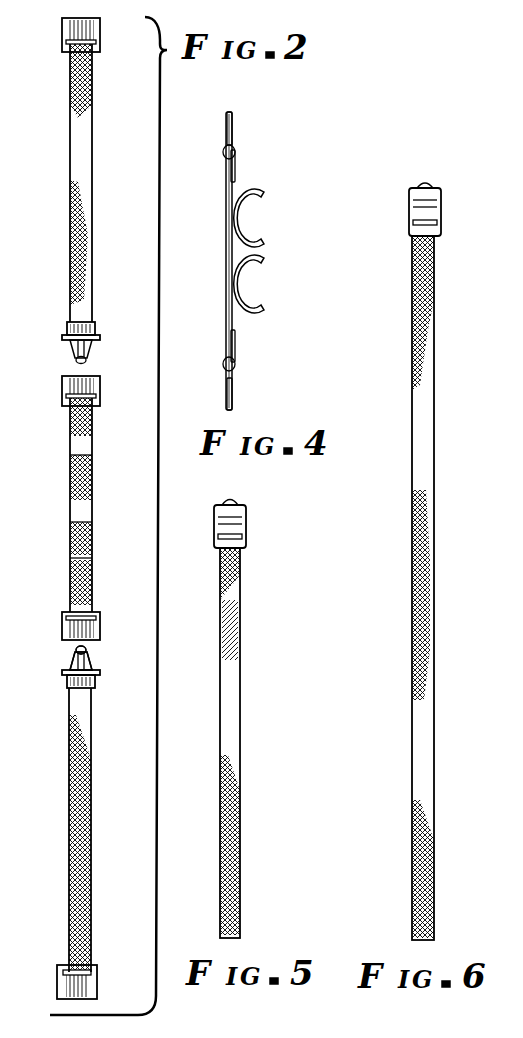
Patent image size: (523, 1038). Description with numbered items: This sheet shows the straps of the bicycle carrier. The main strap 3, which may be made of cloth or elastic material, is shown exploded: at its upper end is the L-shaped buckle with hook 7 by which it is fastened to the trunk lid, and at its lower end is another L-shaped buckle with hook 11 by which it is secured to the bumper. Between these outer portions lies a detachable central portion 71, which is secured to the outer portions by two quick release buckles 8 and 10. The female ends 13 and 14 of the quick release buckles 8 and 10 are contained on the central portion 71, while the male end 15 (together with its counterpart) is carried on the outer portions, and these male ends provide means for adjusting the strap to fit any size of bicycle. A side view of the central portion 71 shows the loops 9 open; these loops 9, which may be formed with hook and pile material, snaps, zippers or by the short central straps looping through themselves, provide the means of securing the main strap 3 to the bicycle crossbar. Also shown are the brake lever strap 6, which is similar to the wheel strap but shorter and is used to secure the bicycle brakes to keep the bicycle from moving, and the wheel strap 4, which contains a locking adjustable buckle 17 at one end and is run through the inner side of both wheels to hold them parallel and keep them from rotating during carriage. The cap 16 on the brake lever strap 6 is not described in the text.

In FIG. 2, the main strap 3 is at (100, 210).
In FIG. 6, the wheel strap 4 is at (440, 754).
In FIG. 5, the brake lever strap 6 is at (244, 840).
In FIG. 2, the L-shaped buckle with hook 7 is at (58, 31).
In FIG. 2, the quick release buckle 8 is at (108, 315).
In FIG. 4, the loops 9 is at (258, 287).
In FIG. 2, the quick release buckle 10 is at (106, 606).
In FIG. 2, the L-shaped buckle with hook 11 is at (48, 980).
In FIG. 2, the female end 13 is at (56, 390).
In FIG. 4, the female end 13 is at (233, 124).
In FIG. 2, the female end 14 is at (64, 626).
In FIG. 4, the female end 14 is at (232, 396).
In FIG. 2, the male end 15 is at (72, 664).
In FIG. 5, the cap 16 is at (254, 546).
In FIG. 6, the locking adjustable buckle 17 is at (448, 238).
In FIG. 2, the detachable central portion 71 is at (93, 440).